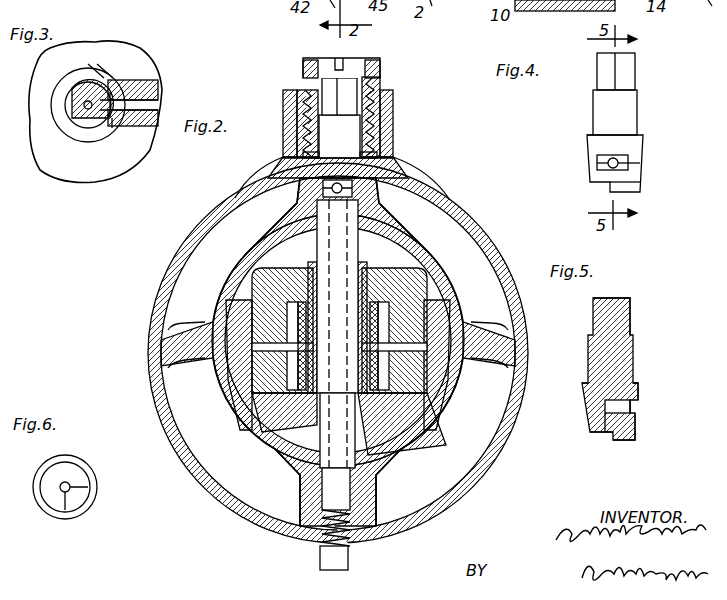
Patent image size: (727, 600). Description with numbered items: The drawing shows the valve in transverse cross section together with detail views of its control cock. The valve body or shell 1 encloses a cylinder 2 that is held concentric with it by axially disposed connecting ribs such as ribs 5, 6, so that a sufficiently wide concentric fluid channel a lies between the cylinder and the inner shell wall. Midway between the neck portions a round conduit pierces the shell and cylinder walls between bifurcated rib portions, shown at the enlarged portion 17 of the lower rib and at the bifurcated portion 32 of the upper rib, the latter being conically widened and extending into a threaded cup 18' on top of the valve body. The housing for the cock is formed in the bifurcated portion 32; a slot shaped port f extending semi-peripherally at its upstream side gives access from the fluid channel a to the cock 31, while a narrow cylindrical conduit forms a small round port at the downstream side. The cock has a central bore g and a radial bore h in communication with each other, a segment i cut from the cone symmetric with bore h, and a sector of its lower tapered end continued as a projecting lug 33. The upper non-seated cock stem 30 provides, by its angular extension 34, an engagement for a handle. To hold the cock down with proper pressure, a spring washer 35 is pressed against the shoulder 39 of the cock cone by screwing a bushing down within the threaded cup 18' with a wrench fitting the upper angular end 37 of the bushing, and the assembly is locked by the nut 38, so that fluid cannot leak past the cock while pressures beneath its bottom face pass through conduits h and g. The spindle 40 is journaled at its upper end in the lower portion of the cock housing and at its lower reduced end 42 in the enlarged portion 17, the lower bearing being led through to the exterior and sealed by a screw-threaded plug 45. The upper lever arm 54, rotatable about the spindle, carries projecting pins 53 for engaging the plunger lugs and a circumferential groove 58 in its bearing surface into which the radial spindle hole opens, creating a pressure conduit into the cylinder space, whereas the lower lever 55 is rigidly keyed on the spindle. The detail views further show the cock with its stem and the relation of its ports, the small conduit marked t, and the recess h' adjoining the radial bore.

In FIG. 2, the valve body or shell 1 is at (461, 209).
In FIG. 2, the cylinder 2 is at (220, 296).
In FIG. 3, the cylinder 2 is at (47, 72).
In FIG. 2, the connecting rib 5 is at (176, 334).
In FIG. 2, the connecting rib 6 is at (500, 342).
In FIG. 2, the enlarged portion of lower rib 17 is at (308, 492).
In FIG. 2, the threaded cup 18' is at (342, 145).
In FIG. 2, the cock stem 30 is at (339, 136).
In FIG. 4, the cock stem 30 is at (625, 112).
In FIG. 5, the cock stem 30 is at (625, 357).
In FIG. 2, the cock 31 is at (352, 173).
In FIG. 6, the cock 31 is at (72, 478).
In FIG. 4, the cock 31 is at (633, 143).
In FIG. 5, the cock 31 is at (637, 393).
In FIG. 2, the bifurcated rib portion 32 is at (308, 198).
In FIG. 3, the bifurcated rib portion 32 is at (106, 72).
In FIG. 6, the projecting lug 33 is at (82, 493).
In FIG. 4, the projecting lug 33 is at (641, 188).
In FIG. 5, the projecting lug 33 is at (640, 432).
In FIG. 2, the angular extension 34 is at (330, 90).
In FIG. 4, the angular extension 34 is at (624, 73).
In FIG. 5, the angular extension 34 is at (617, 310).
In FIG. 2, the spring washer 35 is at (300, 156).
In FIG. 2, the upper angular end of bushing 37 is at (376, 66).
In FIG. 2, the nut 38 is at (392, 100).
In FIG. 4, the shoulder of cock cone 39 is at (591, 135).
In FIG. 5, the shoulder of cock cone 39 is at (587, 383).
In FIG. 2, the spindle 40 is at (337, 334).
In FIG. 2, the lower reduced end of spindle 42 is at (336, 507).
In FIG. 2, the screw-threaded plug 45 is at (322, 548).
In FIG. 2, the projecting pins 53 is at (264, 368).
In FIG. 2, the upper lever arm 54 is at (283, 277).
In FIG. 2, the lower lever 55 is at (426, 447).
In FIG. 2, the circumferential groove 58 is at (377, 260).
In FIG. 2, the fluid channel a is at (334, 352).
In FIG. 3, the slot t is at (164, 100).
In FIG. 3, the slot shaped port f is at (60, 110).
In FIG. 3, the central bore g is at (80, 125).
In FIG. 5, the central bore g is at (612, 425).
In FIG. 3, the radial bore h is at (97, 132).
In FIG. 4, the radial bore h is at (590, 176).
In FIG. 5, the recess h' is at (650, 406).
In FIG. 3, the segment i is at (120, 128).
In FIG. 4, the segment i is at (640, 163).